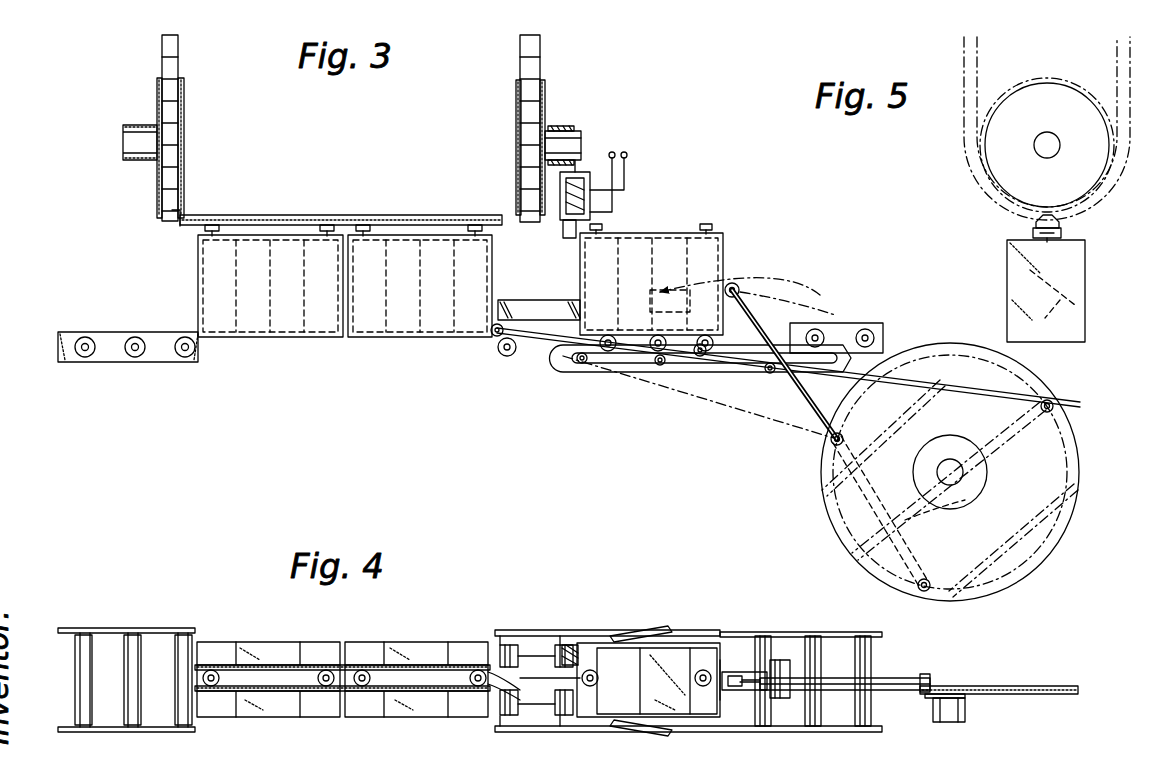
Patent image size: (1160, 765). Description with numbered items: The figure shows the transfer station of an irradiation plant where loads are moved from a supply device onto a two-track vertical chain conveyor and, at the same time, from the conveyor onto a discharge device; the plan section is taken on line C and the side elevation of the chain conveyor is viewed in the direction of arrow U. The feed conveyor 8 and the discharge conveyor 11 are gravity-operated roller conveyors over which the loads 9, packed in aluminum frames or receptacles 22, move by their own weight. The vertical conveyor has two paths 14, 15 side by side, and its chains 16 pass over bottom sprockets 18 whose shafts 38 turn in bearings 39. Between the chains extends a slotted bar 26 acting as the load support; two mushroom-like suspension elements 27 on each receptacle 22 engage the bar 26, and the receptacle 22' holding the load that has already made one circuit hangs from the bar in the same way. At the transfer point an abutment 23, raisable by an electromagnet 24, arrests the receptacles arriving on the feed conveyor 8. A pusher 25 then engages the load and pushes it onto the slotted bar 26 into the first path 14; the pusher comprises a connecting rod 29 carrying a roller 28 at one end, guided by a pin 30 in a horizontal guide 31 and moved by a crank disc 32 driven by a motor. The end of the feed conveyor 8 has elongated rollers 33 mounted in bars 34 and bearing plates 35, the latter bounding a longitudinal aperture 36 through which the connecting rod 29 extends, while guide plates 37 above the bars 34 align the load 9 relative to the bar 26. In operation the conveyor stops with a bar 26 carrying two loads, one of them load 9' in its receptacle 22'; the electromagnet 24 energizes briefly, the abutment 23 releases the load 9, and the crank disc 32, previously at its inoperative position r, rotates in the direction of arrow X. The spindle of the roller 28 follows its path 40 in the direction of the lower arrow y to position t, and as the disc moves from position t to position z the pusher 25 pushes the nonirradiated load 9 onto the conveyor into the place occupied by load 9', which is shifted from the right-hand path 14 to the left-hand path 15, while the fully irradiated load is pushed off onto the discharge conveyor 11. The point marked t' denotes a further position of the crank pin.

In FIG. 3, the feed conveyor 8 is at (840, 322).
In FIG. 4, the feed conveyor 8 is at (830, 645).
In FIG. 3, the load 9 is at (656, 304).
In FIG. 4, the load 9 is at (673, 640).
In FIG. 3, the load 9' is at (419, 288).
In FIG. 4, the load 9' is at (412, 659).
In FIG. 3, the discharge conveyor 11 is at (152, 362).
In FIG. 4, the discharge conveyor 11 is at (105, 634).
In FIG. 3, the first path 14 is at (434, 128).
In FIG. 3, the second path 15 is at (269, 128).
In FIG. 3, the chains 16 is at (170, 55).
In FIG. 5, the chains 16 is at (975, 62).
In FIG. 3, the bottom sprockets 18 is at (158, 96).
In FIG. 5, the bottom sprockets 18 is at (1072, 82).
In FIG. 3, the receptacle 22 is at (676, 284).
In FIG. 4, the receptacle 22 is at (660, 643).
In FIG. 3, the receptacle 22' is at (445, 286).
In FIG. 4, the receptacle 22' is at (416, 659).
In FIG. 3, the abutment 23 is at (569, 238).
In FIG. 4, the abutment 23 is at (572, 645).
In FIG. 3, the electromagnet 24 is at (592, 192).
In FIG. 3, the pusher 25 is at (792, 448).
In FIG. 3, the slotted bar 26 is at (370, 224).
In FIG. 5, the slotted bar 26 is at (1062, 230).
In FIG. 4, the slotted bar 26 is at (290, 688).
In FIG. 3, the suspension elements 27 is at (240, 224).
In FIG. 5, the suspension elements 27 is at (1032, 232).
In FIG. 4, the suspension elements 27 is at (214, 670).
In FIG. 3, the roller 28 is at (494, 337).
In FIG. 4, the roller 28 is at (737, 690).
In FIG. 3, the connecting rod 29 is at (757, 428).
In FIG. 4, the connecting rod 29 is at (904, 680).
In FIG. 3, the pin 30 is at (582, 364).
In FIG. 4, the pin 30 is at (776, 676).
In FIG. 3, the horizontal guide 31 is at (660, 365).
In FIG. 4, the horizontal guide 31 is at (788, 708).
In FIG. 3, the crank disc 32 is at (1040, 540).
In FIG. 4, the crank disc 32 is at (1030, 686).
In FIG. 4, the elongated rollers 33 is at (552, 648).
In FIG. 3, the bars 34 is at (862, 326).
In FIG. 4, the bars 34 is at (160, 632).
In FIG. 4, the bearing plates 35 is at (485, 675).
In FIG. 4, the longitudinal aperture 36 is at (536, 704).
In FIG. 3, the guide plates 37 is at (505, 314).
In FIG. 4, the guide plates 37 is at (640, 636).
In FIG. 3, the shafts 38 is at (575, 140).
In FIG. 5, the shafts 38 is at (1040, 147).
In FIG. 3, the bearings 39 is at (565, 127).
In FIG. 3, the path 40 is at (790, 296).
In FIG. 3, the arrow U is at (105, 148).
In FIG. 3, the section line C is at (188, 222).
In FIG. 3, the position t is at (743, 272).
In FIG. 3, the crank pin position t' is at (944, 571).
In FIG. 3, the arrow y is at (662, 298).
In FIG. 3, the position z is at (842, 440).
In FIG. 3, the inoperative position r is at (1090, 405).
In FIG. 3, the arrow X is at (1032, 452).